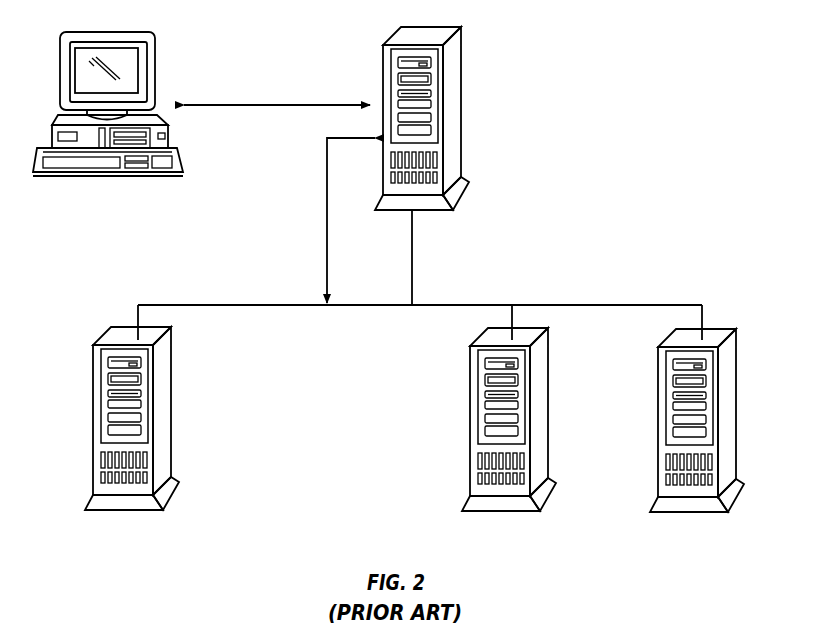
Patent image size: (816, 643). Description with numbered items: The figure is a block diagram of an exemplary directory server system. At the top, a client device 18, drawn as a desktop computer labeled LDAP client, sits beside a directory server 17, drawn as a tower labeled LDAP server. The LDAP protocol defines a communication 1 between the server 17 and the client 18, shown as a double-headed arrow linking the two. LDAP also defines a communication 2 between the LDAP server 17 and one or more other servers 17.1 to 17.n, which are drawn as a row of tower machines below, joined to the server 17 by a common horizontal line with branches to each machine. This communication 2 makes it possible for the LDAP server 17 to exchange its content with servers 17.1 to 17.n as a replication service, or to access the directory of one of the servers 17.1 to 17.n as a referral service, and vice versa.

The client device 18 is at (123, 30).
The directory server 17 is at (452, 72).
The communication 1 is at (258, 104).
The communication 2 is at (327, 207).
The other server 17.1 is at (162, 387).
The other server 17.n is at (658, 390).